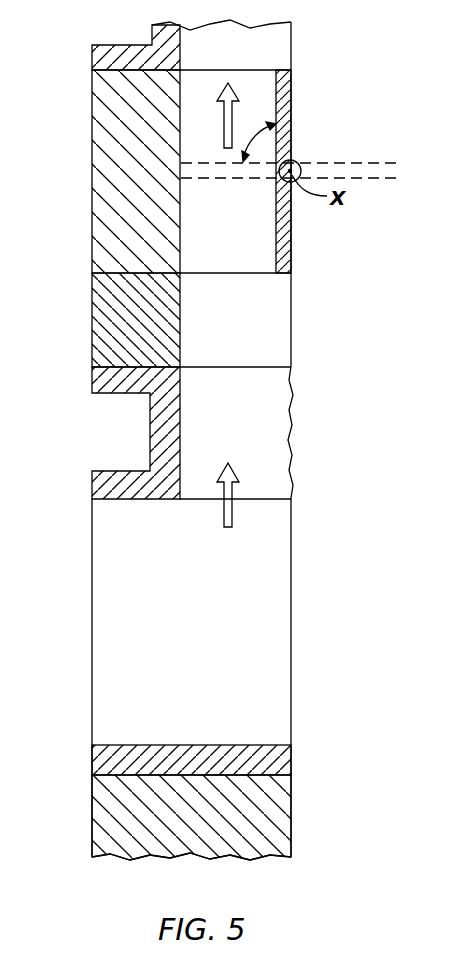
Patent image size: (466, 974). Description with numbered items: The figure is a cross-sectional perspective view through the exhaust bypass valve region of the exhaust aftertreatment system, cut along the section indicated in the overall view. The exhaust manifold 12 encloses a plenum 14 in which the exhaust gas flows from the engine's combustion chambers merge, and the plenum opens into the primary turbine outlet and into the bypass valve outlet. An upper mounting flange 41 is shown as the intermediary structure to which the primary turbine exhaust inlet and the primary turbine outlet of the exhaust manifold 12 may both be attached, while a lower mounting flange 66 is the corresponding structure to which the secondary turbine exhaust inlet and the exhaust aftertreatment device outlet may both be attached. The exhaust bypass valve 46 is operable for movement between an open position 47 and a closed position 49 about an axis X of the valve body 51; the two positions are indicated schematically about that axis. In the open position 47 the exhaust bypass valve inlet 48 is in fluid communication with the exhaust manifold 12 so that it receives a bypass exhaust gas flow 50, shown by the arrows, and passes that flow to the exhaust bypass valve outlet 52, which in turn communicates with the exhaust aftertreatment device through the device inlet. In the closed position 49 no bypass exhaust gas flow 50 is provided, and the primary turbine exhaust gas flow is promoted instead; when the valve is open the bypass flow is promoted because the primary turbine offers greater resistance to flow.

The exhaust manifold 12 is at (105, 484).
The plenum 14 is at (120, 638).
The upper mounting flange 41 is at (105, 323).
The exhaust bypass valve 46 is at (91, 212).
The open position 47 is at (292, 137).
The exhaust bypass valve inlet 48 is at (241, 275).
The closed position 49 is at (211, 180).
The bypass exhaust gas flow 50 is at (232, 122).
The valve body 51 is at (292, 252).
The exhaust bypass valve outlet 52 is at (252, 70).
The lower mounting flange 66 is at (118, 817).